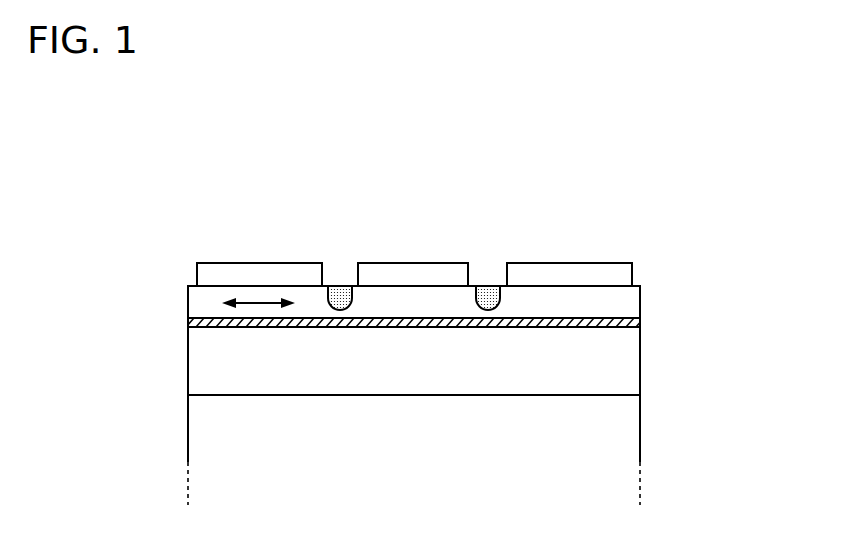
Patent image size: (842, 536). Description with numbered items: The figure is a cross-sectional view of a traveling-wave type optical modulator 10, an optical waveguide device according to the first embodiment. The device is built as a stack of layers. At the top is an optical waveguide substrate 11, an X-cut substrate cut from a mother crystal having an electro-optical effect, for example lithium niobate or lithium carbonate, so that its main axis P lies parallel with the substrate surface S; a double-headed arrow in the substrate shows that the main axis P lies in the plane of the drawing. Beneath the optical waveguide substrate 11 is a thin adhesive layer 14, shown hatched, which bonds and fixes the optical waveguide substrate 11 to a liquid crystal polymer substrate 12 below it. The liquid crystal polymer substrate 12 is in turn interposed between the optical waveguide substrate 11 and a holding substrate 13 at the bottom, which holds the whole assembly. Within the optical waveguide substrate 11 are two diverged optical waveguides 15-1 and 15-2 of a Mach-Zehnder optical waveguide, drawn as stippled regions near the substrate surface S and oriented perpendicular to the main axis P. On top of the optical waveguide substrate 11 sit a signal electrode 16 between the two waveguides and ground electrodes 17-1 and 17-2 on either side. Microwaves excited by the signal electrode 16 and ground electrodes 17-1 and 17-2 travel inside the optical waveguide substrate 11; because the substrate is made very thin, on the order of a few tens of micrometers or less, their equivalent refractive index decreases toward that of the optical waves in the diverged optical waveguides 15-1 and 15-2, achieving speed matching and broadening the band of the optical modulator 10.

The optical modulator 10 is at (640, 141).
The optical waveguide substrate 11 is at (630, 303).
The liquid crystal polymer substrate 12 is at (625, 357).
The holding substrate 13 is at (625, 430).
The adhesive layer 14 is at (630, 323).
The diverged optical waveguide 15-1 is at (340, 289).
The diverged optical waveguide 15-2 is at (488, 289).
The signal electrode 16 is at (413, 273).
The ground electrode 17-1 is at (282, 275).
The ground electrode 17-2 is at (567, 273).
The substrate surface S is at (217, 285).
The main axis P is at (258, 302).